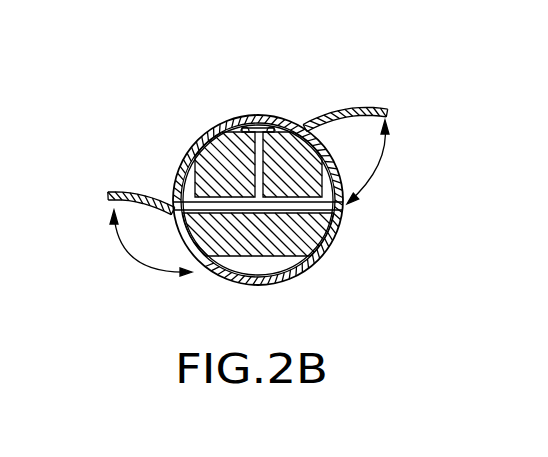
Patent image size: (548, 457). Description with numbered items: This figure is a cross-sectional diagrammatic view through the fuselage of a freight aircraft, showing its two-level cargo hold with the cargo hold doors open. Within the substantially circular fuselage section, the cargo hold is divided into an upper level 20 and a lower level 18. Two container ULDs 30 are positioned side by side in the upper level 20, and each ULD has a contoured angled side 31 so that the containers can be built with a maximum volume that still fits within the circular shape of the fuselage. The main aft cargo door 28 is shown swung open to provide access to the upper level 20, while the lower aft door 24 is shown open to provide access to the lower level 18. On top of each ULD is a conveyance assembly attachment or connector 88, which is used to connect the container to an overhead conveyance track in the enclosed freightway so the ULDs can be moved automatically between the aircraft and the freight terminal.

The lower level 18 is at (297, 233).
The upper level 20 is at (184, 173).
The lower aft door 24 is at (113, 190).
The main aft cargo door 28 is at (350, 104).
The container ULDs 30 is at (222, 153).
The contoured angled side 31 is at (195, 150).
The conveyance assembly attachment or connector 88 is at (270, 130).